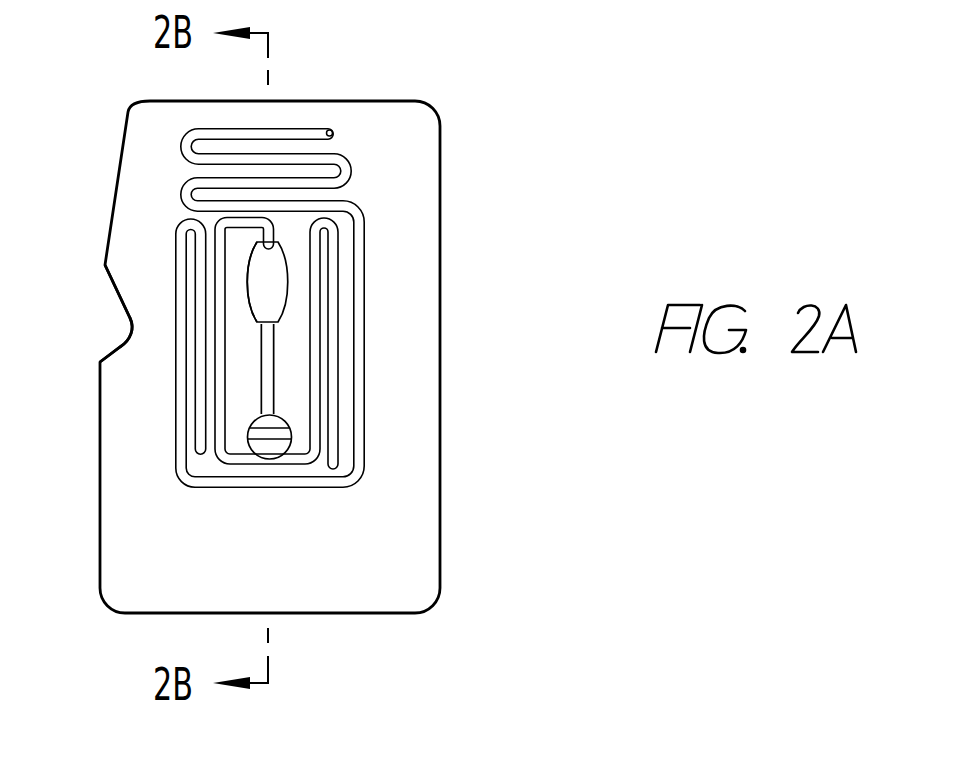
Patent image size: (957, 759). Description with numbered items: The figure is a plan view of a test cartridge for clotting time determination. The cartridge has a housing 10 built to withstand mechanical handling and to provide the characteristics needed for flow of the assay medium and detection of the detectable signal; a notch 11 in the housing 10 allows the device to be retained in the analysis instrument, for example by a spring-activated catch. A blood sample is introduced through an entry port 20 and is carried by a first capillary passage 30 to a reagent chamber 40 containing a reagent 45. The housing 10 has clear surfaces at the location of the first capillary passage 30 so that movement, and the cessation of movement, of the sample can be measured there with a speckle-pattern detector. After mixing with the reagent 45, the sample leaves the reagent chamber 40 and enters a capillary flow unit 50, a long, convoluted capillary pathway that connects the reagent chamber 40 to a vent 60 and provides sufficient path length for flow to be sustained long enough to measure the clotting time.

The housing 10 is at (441, 153).
The notch 11 is at (117, 325).
The entry port 20 is at (267, 436).
The first capillary passage 30 is at (275, 375).
The reagent chamber 40 is at (287, 281).
The reagent 45 is at (258, 279).
The capillary flow unit 50 is at (367, 237).
The vent 60 is at (333, 129).